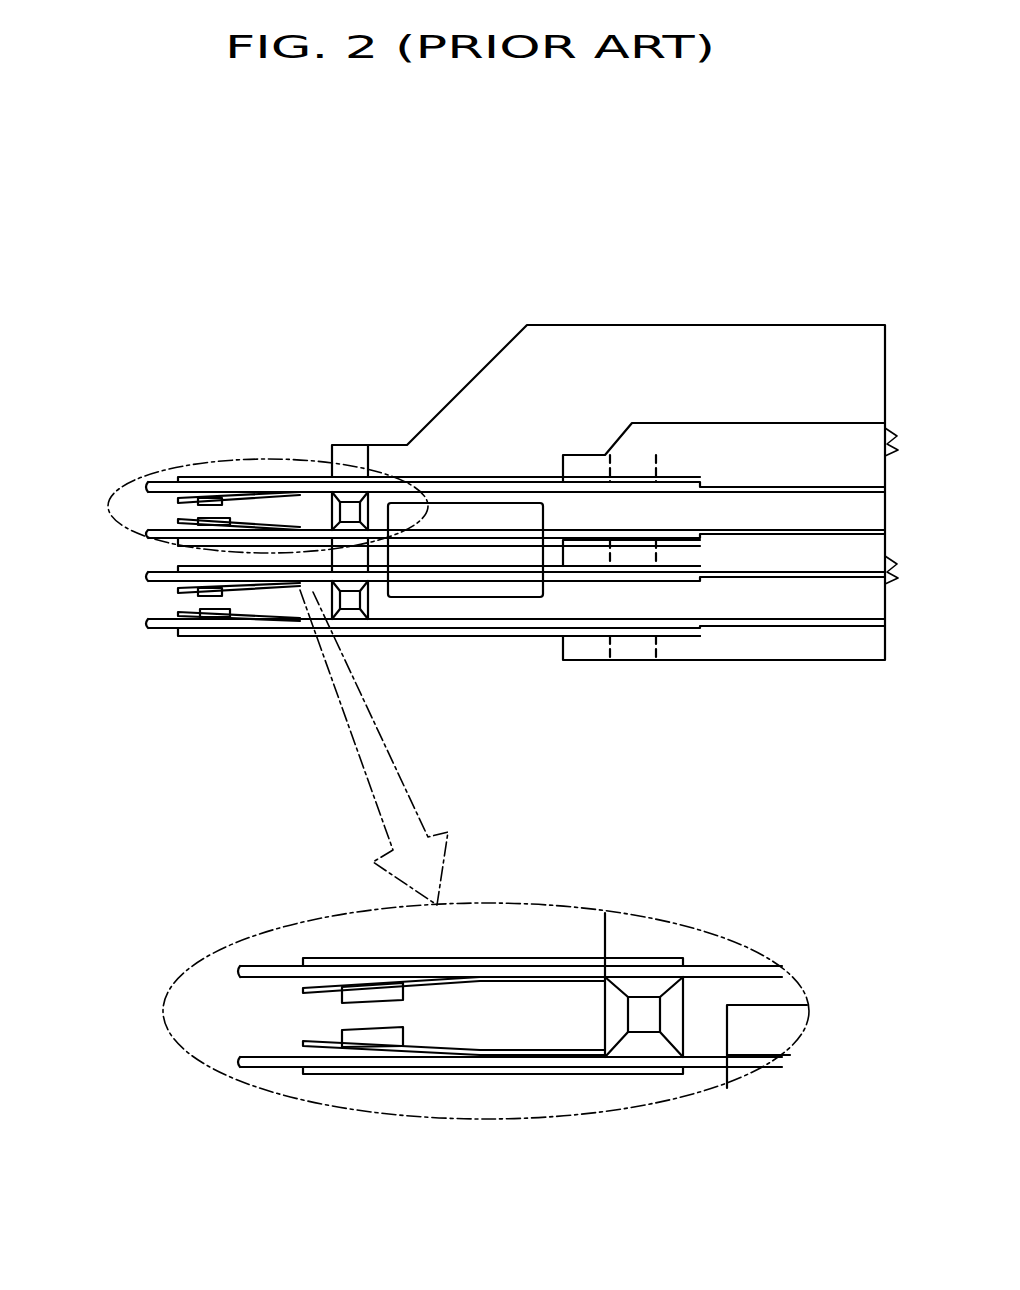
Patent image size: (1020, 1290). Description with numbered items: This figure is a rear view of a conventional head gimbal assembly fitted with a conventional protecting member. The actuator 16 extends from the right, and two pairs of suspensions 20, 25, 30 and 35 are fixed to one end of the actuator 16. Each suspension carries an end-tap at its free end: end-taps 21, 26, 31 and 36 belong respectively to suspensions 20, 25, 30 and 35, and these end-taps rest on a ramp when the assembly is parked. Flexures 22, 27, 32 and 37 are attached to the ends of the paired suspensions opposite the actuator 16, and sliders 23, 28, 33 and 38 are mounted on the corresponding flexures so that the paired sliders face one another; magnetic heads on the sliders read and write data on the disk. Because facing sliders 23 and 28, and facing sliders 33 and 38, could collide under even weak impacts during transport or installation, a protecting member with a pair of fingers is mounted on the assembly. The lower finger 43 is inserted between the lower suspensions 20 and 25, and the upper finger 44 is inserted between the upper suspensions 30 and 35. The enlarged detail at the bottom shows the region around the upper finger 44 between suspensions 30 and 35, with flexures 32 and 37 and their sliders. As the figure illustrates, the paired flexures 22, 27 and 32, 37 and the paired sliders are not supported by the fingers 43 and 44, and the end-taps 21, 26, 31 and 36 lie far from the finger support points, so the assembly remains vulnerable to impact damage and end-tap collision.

The actuator 16 is at (743, 660).
The suspension 20 is at (427, 624).
The end-tap 21 is at (165, 628).
The flexure 22 is at (178, 614).
The slider 23 is at (218, 605).
The suspension 25 is at (500, 585).
The end-tap 26 is at (148, 577).
The flexure 27 is at (178, 590).
The slider 28 is at (230, 592).
The suspension 30 is at (582, 535).
The end-tap 31 is at (148, 536).
The flexure 32 is at (178, 521).
The slider 33 is at (215, 520).
The suspension 35 is at (470, 483).
The end-tap 36 is at (150, 490).
The flexure 37 is at (180, 500).
The slider 38 is at (222, 500).
The lower finger 43 is at (354, 620).
The upper finger 44 is at (352, 496).